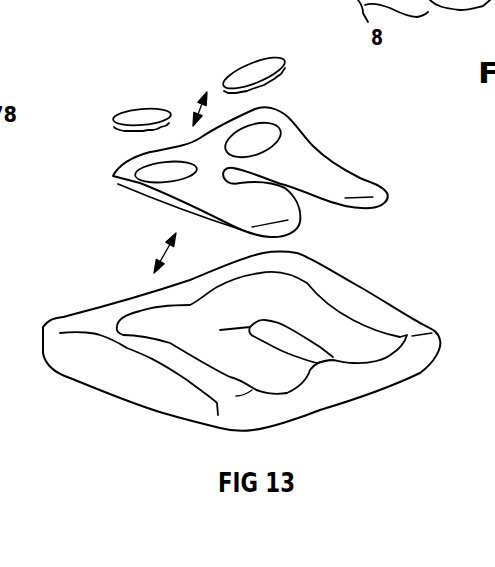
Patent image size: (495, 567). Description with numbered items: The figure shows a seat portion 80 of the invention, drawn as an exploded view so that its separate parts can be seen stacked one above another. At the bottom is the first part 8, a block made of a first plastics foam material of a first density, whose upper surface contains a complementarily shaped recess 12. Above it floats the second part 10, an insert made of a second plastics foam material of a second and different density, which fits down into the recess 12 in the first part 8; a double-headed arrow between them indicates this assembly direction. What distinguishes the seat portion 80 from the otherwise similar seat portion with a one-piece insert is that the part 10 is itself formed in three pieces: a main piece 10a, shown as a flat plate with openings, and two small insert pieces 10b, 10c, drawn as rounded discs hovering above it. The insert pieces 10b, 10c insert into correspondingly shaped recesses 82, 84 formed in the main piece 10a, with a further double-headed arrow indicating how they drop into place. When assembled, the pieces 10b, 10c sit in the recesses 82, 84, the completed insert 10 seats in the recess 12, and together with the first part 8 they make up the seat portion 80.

The first part 8 is at (368, 290).
The second part 10 is at (314, 137).
The main piece 10a is at (330, 178).
The insert piece 10b is at (250, 73).
The insert piece 10c is at (138, 113).
The recess 12 is at (167, 323).
The seat portion 80 is at (414, 210).
The recess 82 is at (252, 137).
The recess 84 is at (155, 170).